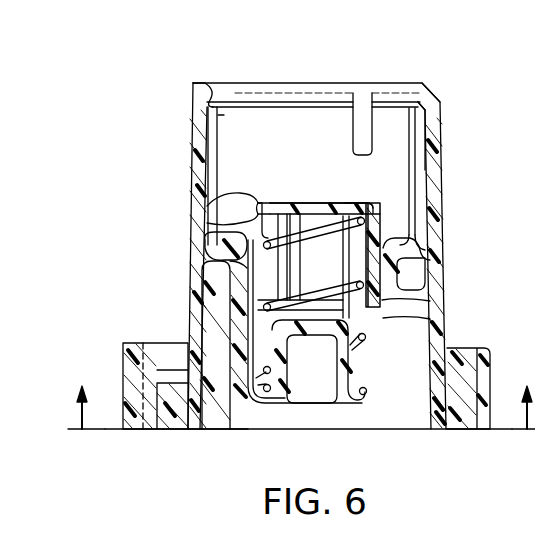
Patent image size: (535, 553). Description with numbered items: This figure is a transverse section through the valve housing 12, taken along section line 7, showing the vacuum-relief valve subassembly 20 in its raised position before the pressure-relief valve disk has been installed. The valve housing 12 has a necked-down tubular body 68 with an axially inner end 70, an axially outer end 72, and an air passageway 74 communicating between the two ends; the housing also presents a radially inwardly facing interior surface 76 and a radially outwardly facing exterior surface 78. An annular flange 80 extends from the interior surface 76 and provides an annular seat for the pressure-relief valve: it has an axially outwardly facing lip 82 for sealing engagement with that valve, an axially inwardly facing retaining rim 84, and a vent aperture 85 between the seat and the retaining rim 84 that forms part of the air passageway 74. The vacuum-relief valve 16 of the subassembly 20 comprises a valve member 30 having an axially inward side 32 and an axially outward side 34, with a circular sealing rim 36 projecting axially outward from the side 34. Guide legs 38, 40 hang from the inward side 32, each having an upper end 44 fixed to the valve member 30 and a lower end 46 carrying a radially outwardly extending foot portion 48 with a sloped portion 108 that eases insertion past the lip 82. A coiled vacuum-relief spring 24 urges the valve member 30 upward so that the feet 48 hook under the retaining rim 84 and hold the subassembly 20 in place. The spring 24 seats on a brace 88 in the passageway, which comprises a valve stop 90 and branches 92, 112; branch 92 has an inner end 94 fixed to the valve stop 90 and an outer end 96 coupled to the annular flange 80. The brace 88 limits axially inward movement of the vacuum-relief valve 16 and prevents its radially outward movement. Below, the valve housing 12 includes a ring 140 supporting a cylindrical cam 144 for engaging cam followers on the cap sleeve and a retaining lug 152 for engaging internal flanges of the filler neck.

The section line 7- 7 is at (301, 396).
The valve housing 12 is at (190, 80).
The vacuum-relief valve 16 is at (310, 196).
The vacuum-relief valve subassembly 20 is at (274, 152).
The vacuum-relief spring 24 is at (280, 403).
The valve member 30 is at (340, 198).
The axially inward side 32 is at (256, 216).
The axially outward side 34 is at (245, 202).
The circular sealing rim 36 is at (268, 196).
The guide leg 38 is at (422, 224).
The guide leg 40 is at (300, 258).
The upper end 44 is at (400, 214).
The lower end 46 is at (438, 320).
The foot portion 48 is at (378, 303).
The necked-down tubular body 68 is at (443, 108).
The axially inner end 70 is at (186, 428).
The axially outer end 72 is at (432, 86).
The air passageway 74 is at (320, 116).
The radially inwardly facing interior surface 76 is at (222, 105).
The radially outwardly facing exterior surface 78 is at (440, 152).
The annular flange 80 is at (412, 250).
The axially outwardly facing lip 82 is at (222, 240).
The axially inwardly facing retaining rim 84 is at (427, 280).
The vent aperture 85 is at (216, 275).
The brace 88 is at (225, 299).
The valve stop 90 is at (318, 330).
The branch 92 is at (228, 333).
The inner end 94 is at (230, 429).
The outer end 96 is at (262, 259).
The sloped portion 108 is at (430, 301).
The branch 112 is at (345, 330).
The ring 140 is at (478, 430).
The cylindrical cam 144 is at (428, 426).
The retaining lug 152 is at (137, 420).